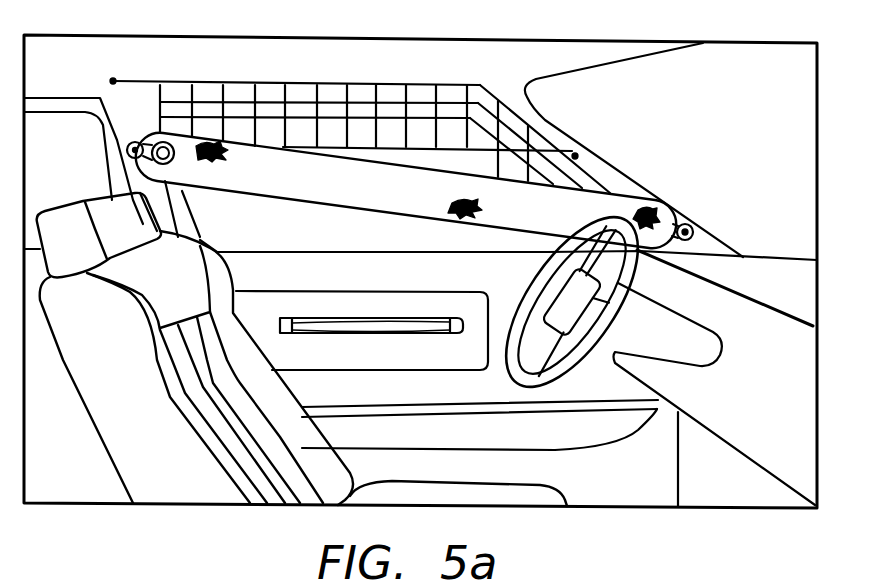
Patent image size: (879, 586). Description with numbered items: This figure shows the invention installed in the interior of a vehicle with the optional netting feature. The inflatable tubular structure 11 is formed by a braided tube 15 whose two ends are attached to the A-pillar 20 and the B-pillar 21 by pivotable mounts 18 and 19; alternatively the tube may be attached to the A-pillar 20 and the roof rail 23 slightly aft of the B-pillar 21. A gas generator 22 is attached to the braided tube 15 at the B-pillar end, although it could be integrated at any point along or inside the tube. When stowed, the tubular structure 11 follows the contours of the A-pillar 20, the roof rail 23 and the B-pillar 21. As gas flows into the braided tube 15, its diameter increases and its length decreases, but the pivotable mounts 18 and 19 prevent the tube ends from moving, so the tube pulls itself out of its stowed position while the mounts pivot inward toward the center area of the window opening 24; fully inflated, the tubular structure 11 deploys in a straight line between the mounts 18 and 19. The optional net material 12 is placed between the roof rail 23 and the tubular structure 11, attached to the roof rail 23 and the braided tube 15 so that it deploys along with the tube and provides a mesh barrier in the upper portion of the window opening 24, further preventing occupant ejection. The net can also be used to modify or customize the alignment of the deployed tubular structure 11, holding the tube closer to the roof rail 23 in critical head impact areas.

The inflatable tubular structure 11 is at (554, 175).
The net material 12 is at (273, 117).
The braided tube 15 is at (327, 165).
The pivotable mount 18 is at (690, 217).
The pivotable mount 19 is at (120, 135).
The A-pillar 20 is at (608, 178).
The B-pillar 21 is at (133, 173).
The gas generator 22 is at (152, 134).
The roof rail 23 is at (190, 65).
The window opening 24 is at (424, 133).